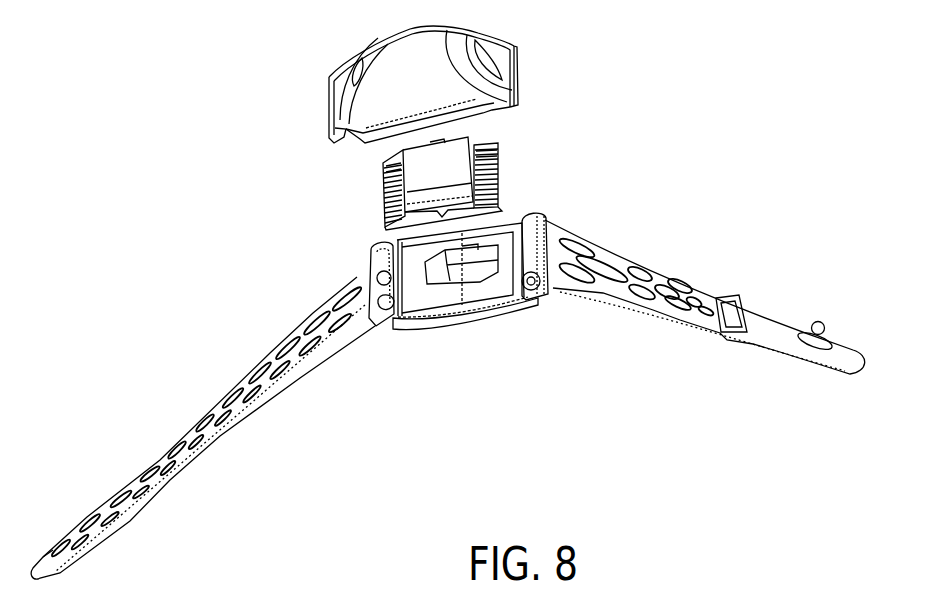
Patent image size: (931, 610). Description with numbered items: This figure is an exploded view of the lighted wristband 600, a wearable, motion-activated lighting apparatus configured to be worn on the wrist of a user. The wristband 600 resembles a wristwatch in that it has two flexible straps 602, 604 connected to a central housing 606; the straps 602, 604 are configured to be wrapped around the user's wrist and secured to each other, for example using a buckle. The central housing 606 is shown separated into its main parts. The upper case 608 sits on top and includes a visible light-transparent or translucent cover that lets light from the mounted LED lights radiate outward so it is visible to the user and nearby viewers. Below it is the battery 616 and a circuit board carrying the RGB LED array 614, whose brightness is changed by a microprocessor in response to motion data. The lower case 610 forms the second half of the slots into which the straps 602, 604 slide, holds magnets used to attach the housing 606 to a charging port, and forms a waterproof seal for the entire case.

The lighted wristband 600 is at (200, 140).
The flexible strap 602 is at (80, 537).
The flexible strap 604 is at (772, 345).
The central housing 606 is at (602, 150).
The upper case 608 is at (433, 78).
The lower case 610 is at (471, 325).
The RGB LED array 614 is at (383, 167).
The battery 616 is at (452, 177).